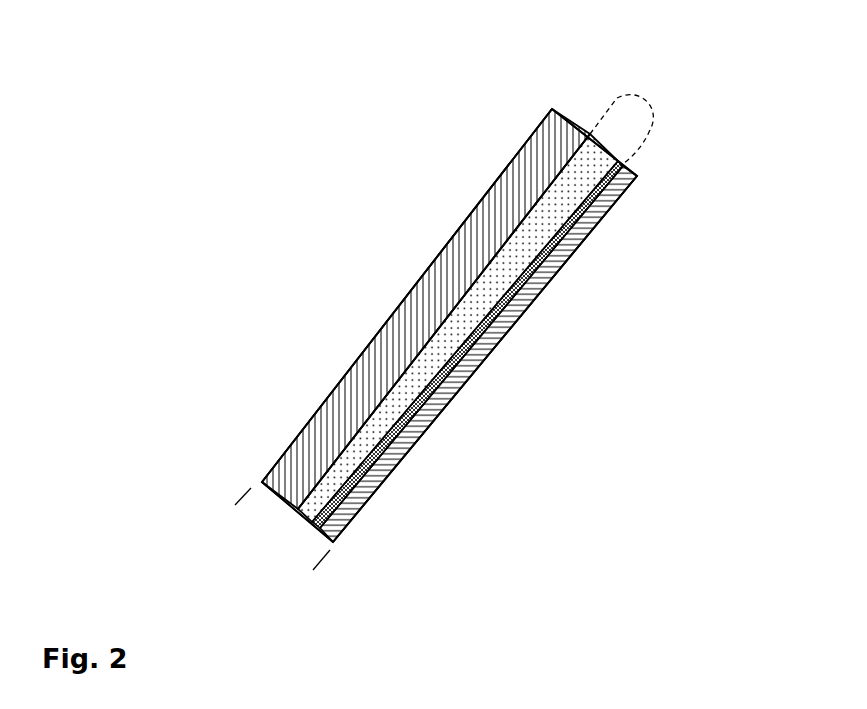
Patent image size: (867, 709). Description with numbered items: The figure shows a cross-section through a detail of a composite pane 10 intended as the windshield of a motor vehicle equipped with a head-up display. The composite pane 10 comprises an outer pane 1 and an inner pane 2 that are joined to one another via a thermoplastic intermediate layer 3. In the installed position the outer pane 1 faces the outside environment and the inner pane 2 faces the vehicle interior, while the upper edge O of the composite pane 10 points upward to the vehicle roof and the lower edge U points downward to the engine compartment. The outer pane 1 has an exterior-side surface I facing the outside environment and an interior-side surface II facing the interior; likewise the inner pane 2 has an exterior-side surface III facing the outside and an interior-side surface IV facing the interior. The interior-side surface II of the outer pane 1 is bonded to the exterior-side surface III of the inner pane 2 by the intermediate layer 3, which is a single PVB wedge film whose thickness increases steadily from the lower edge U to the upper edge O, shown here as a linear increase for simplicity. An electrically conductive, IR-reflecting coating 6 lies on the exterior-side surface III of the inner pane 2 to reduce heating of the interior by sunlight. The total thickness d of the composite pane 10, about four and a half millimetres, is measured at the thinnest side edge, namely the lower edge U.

The composite pane 10 is at (330, 236).
The outer pane 1 is at (512, 207).
The thermoplastic intermediate layer 3 is at (590, 165).
The electrically conductive coating 6 is at (608, 187).
The inner pane 2 is at (600, 227).
The upper edge O is at (586, 129).
The lower edge U is at (292, 513).
The total thickness d is at (348, 583).
The exterior-side surface I is at (318, 407).
The interior-side surface II is at (310, 488).
The exterior-side surface III is at (456, 393).
The interior-side surface IV is at (424, 444).